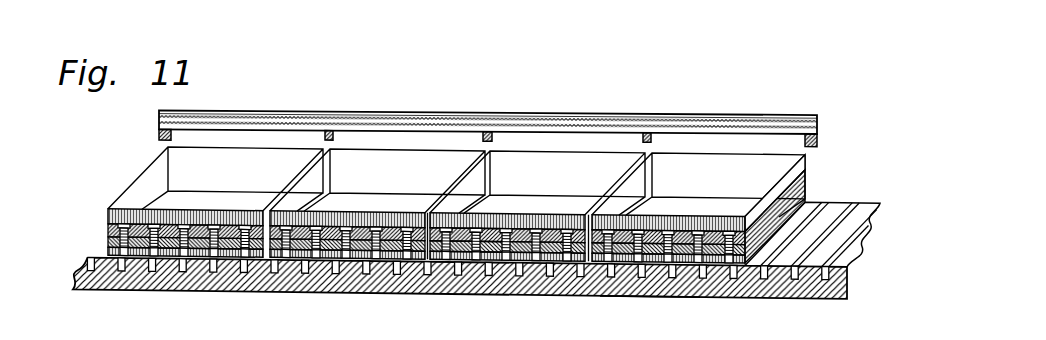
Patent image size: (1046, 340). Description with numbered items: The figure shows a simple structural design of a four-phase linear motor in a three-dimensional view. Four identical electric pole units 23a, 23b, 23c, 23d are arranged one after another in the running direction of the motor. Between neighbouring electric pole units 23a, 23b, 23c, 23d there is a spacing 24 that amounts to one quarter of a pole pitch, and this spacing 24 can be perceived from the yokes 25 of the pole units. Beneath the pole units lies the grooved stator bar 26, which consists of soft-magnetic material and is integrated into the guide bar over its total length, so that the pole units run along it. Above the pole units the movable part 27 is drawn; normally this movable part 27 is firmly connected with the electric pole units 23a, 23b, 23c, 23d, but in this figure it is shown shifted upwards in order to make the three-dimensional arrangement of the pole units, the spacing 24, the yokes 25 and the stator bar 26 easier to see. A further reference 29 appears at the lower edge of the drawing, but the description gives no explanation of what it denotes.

The electric pole unit 23a is at (205, 198).
The electric pole unit 23b is at (365, 198).
The electric pole unit 23c is at (528, 197).
The electric pole unit 23d is at (688, 199).
The spacing 24 is at (478, 152).
The yoke 25 is at (646, 154).
The grooved stator bar 26 is at (868, 246).
The movable part 27 is at (817, 127).
The assembly 29 is at (665, 329).